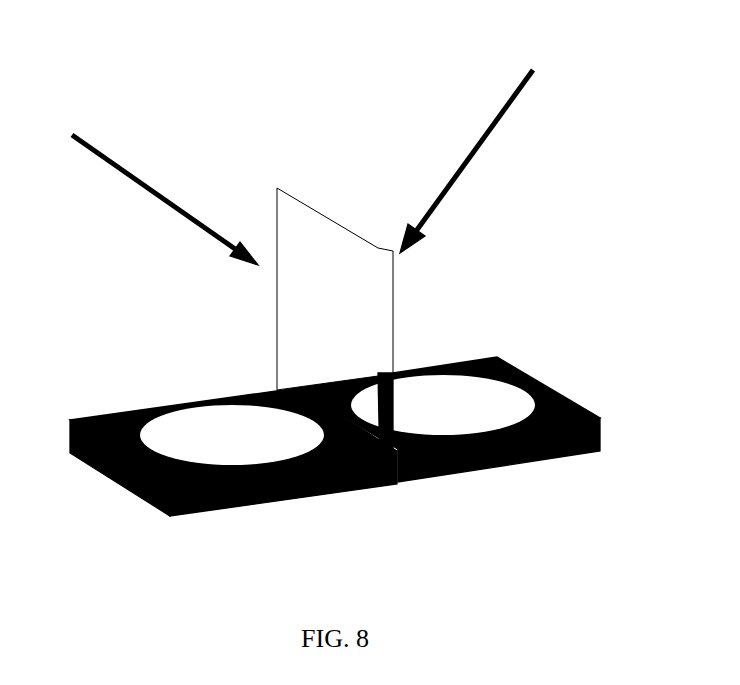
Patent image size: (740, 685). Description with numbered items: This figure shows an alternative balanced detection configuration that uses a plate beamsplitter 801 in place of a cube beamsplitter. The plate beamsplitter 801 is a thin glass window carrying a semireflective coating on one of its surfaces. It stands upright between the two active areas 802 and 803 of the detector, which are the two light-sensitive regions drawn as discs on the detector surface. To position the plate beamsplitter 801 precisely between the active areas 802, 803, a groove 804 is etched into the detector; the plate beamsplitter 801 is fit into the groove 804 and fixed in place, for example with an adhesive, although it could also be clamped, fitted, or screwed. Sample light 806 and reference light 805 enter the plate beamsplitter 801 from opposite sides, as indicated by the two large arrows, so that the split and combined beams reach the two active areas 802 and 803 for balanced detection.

The plate beamsplitter 801 is at (270, 180).
The active area 802 is at (243, 470).
The active area 803 is at (452, 437).
The groove 804 is at (380, 475).
The reference light 805 is at (162, 177).
The sample light 806 is at (489, 140).